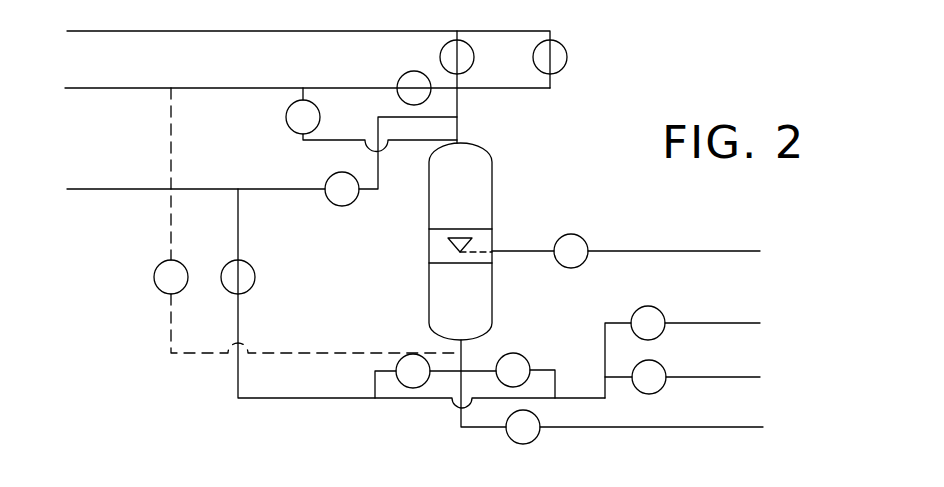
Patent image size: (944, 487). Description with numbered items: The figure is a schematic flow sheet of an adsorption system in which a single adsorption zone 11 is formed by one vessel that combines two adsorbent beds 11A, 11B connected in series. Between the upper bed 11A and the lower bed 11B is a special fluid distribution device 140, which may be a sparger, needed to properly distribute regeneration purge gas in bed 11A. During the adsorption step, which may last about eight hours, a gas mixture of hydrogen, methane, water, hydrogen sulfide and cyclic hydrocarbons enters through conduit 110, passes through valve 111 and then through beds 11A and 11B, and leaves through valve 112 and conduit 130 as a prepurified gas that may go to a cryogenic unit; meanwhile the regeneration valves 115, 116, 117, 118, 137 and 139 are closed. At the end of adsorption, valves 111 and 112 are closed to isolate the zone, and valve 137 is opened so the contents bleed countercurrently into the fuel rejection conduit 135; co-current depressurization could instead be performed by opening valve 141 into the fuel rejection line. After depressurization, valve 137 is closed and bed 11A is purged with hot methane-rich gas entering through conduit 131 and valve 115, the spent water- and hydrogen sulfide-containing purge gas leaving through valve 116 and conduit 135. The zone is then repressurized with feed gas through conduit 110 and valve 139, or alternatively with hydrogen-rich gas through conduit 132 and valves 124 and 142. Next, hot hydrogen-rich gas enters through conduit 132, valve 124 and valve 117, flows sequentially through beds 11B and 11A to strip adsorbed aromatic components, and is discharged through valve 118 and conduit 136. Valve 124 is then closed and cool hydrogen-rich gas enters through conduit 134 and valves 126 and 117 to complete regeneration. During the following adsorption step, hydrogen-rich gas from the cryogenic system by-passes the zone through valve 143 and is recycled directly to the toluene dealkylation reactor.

The adsorption zone 11 is at (459, 241).
The bed 11A is at (492, 180).
The bed 11B is at (492, 292).
The conduit 110 is at (142, 31).
The valve 111 is at (474, 50).
The valve 112 is at (540, 418).
The valve 115 is at (583, 238).
The valve 116 is at (402, 74).
The valve 117 is at (527, 357).
The valve 118 is at (331, 203).
The valve 124 is at (662, 363).
The valve 126 is at (640, 307).
The conduit 130 is at (682, 427).
The conduit 131 is at (700, 251).
The conduit 132 is at (718, 377).
The conduit 134 is at (720, 321).
The conduit 135 is at (118, 88).
The conduit 136 is at (142, 170).
The valve 137 is at (285, 113).
The valve 139 is at (567, 55).
The fluid distribution device 140 is at (450, 245).
The valve 141 is at (156, 275).
The valve 142 is at (395, 362).
The valve 143 is at (249, 264).